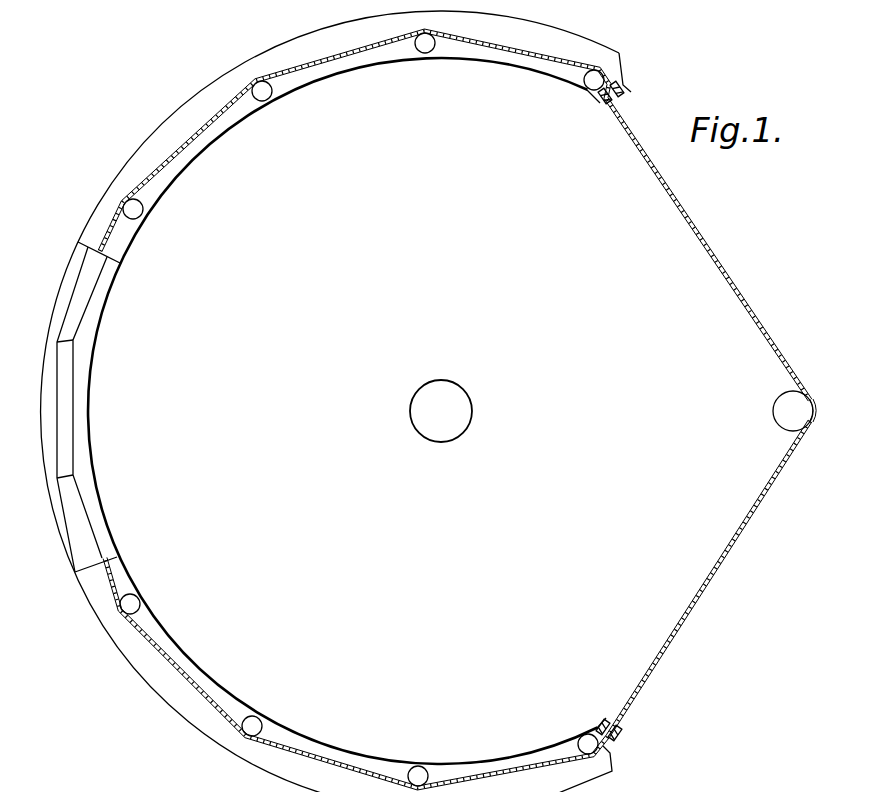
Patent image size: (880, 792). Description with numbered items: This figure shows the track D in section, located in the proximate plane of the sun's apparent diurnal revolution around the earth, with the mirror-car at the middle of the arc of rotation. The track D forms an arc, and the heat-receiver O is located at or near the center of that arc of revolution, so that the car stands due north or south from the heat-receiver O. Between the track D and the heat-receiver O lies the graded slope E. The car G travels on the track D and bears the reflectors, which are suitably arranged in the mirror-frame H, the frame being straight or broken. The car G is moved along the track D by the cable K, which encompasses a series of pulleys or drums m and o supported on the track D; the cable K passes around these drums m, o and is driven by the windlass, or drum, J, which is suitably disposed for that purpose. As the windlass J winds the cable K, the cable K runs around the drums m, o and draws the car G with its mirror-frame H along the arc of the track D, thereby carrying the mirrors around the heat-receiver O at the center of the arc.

The track D is at (336, 401).
The graded slope E is at (342, 411).
The heat-receiver O is at (441, 411).
The windlass J is at (776, 420).
The drums o is at (427, 34).
The cable K is at (200, 133).
The drums m is at (620, 97).
The car G is at (80, 379).
The mirror-frame H is at (81, 409).